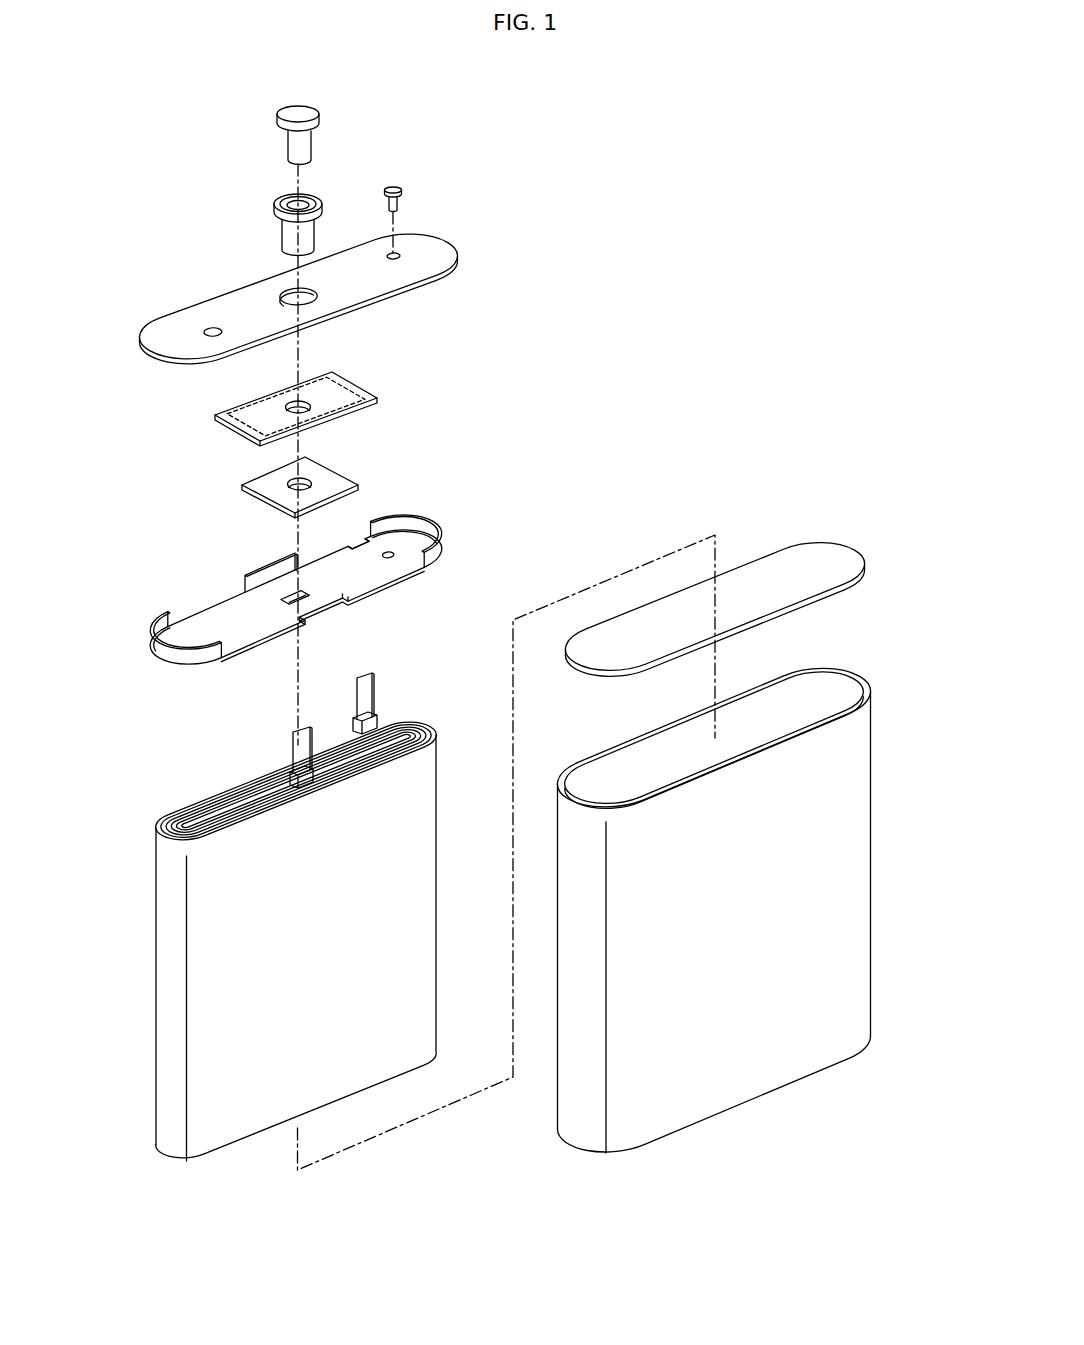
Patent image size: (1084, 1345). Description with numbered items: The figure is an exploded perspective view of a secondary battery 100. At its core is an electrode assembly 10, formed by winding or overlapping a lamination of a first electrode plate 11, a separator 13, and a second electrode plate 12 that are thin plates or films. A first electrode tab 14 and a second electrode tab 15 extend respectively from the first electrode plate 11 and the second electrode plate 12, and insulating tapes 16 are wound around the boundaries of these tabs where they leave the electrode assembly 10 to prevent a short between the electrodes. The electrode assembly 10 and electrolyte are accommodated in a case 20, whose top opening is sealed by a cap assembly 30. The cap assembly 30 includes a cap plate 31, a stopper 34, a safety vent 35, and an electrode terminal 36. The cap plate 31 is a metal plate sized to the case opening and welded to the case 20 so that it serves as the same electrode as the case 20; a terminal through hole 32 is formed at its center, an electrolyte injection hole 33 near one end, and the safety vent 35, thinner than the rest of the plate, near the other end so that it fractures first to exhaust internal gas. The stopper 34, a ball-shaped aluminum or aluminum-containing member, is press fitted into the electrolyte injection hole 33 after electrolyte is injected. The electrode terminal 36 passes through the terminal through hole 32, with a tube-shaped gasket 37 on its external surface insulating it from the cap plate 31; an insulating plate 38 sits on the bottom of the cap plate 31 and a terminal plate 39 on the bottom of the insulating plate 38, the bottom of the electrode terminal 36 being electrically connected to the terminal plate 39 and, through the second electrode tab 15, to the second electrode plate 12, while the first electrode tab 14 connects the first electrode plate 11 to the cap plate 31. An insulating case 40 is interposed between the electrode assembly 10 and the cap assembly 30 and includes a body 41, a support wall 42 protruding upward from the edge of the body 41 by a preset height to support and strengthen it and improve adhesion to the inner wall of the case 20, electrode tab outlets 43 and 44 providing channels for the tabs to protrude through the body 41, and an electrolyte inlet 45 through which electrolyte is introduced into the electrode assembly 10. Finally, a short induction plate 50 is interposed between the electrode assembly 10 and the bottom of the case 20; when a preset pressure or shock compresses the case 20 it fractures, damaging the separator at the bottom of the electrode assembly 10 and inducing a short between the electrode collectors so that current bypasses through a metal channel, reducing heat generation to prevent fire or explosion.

The secondary battery 100 is at (702, 192).
The electrode assembly 10 is at (493, 679).
The first electrode plate 11 is at (430, 727).
The second electrode plate 12 is at (408, 733).
The separator 13 is at (420, 723).
The first electrode tab 14 is at (367, 676).
The second electrode tab 15 is at (298, 743).
The insulating tapes 16 is at (352, 725).
The case 20 is at (855, 840).
The cap assembly 30 is at (462, 311).
The cap plate 31 is at (233, 298).
The terminal through hole 32 is at (282, 290).
The electrolyte injection hole 33 is at (398, 255).
The stopper 34 is at (393, 187).
The safety vent 35 is at (212, 327).
The electrode terminal 36 is at (292, 111).
The gasket 37 is at (278, 207).
The insulating plate 38 is at (230, 430).
The terminal plate 39 is at (260, 492).
The insulating case 40 is at (168, 598).
The body 41 is at (213, 607).
The support wall 42 is at (423, 523).
The electrode tab outlet 43 is at (360, 545).
The electrode tab outlet 44 is at (297, 592).
The electrolyte inlet 45 is at (393, 557).
The short induction plate 50 is at (866, 538).